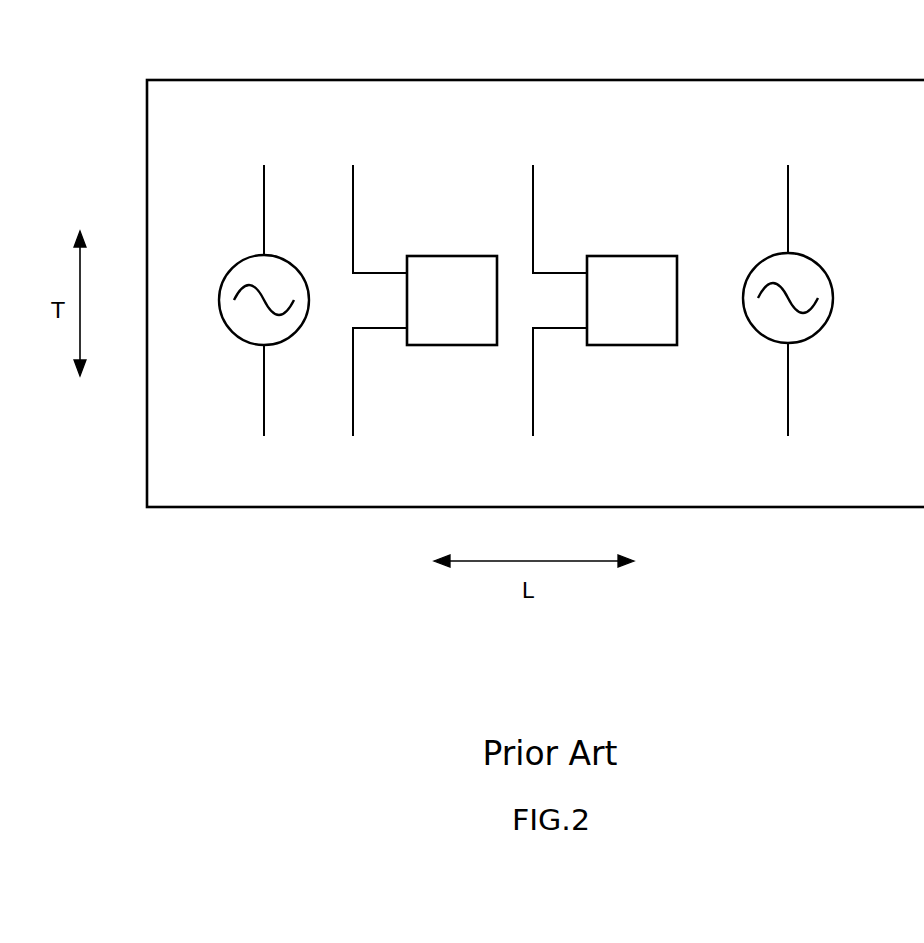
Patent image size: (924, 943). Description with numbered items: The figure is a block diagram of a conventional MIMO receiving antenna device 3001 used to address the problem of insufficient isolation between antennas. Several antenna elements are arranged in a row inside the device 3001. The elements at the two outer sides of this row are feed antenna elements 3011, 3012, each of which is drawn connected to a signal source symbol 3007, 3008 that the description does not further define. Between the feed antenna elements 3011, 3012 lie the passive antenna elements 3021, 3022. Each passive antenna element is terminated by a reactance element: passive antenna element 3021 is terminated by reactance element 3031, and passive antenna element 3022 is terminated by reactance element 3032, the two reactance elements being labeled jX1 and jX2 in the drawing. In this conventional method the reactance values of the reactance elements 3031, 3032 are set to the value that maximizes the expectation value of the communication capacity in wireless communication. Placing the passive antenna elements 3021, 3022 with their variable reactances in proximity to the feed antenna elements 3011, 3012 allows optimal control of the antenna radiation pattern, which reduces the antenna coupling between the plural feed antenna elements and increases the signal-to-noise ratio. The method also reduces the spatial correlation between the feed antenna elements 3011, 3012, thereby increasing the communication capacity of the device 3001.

The MIMO receiving antenna device 3001 is at (808, 64).
The feed antenna element 3011 is at (298, 174).
The passive antenna element 3021 is at (387, 174).
The passive antenna element 3022 is at (567, 174).
The feed antenna element 3012 is at (822, 172).
The first signal source 3007 is at (246, 263).
The second signal source 3008 is at (815, 334).
The reactance element 3031 is at (486, 242).
The reactance element 3032 is at (666, 242).